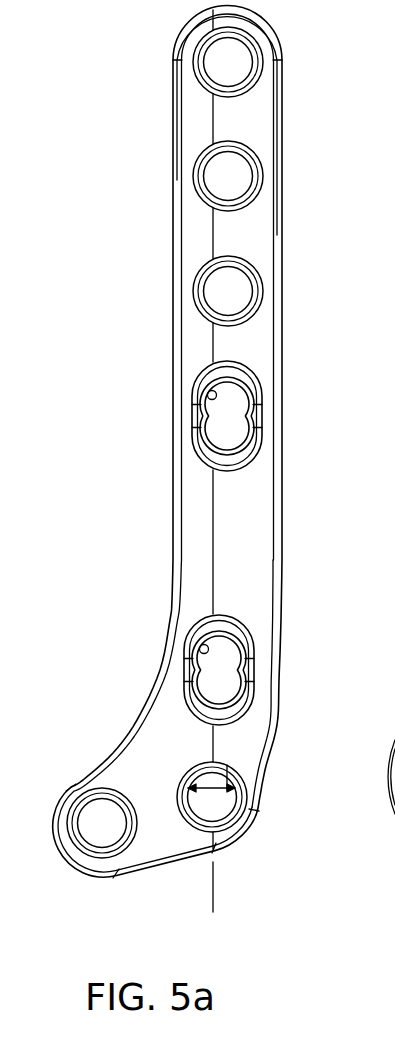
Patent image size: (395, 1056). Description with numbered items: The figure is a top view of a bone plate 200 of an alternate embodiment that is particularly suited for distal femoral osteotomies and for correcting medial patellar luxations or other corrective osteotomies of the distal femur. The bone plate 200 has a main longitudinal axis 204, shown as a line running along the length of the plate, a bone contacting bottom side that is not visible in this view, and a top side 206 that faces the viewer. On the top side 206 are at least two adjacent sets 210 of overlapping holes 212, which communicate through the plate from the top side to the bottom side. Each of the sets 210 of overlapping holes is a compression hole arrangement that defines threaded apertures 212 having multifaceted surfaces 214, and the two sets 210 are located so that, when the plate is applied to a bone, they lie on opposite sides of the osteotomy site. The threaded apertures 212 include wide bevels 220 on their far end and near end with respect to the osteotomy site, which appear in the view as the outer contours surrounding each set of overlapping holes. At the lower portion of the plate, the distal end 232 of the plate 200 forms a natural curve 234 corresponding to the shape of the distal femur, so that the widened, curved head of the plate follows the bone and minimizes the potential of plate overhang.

The bone plate 200 is at (322, 268).
The main longitudinal axis 204 is at (214, 888).
The top side 206 is at (250, 560).
The sets of overlapping holes 210 is at (252, 417).
The threaded apertures 212 is at (255, 378).
The multifaceted surfaces 214 is at (207, 375).
The wide bevels 220 is at (227, 365).
The distal end 232 is at (232, 828).
The natural curve 234 is at (273, 763).